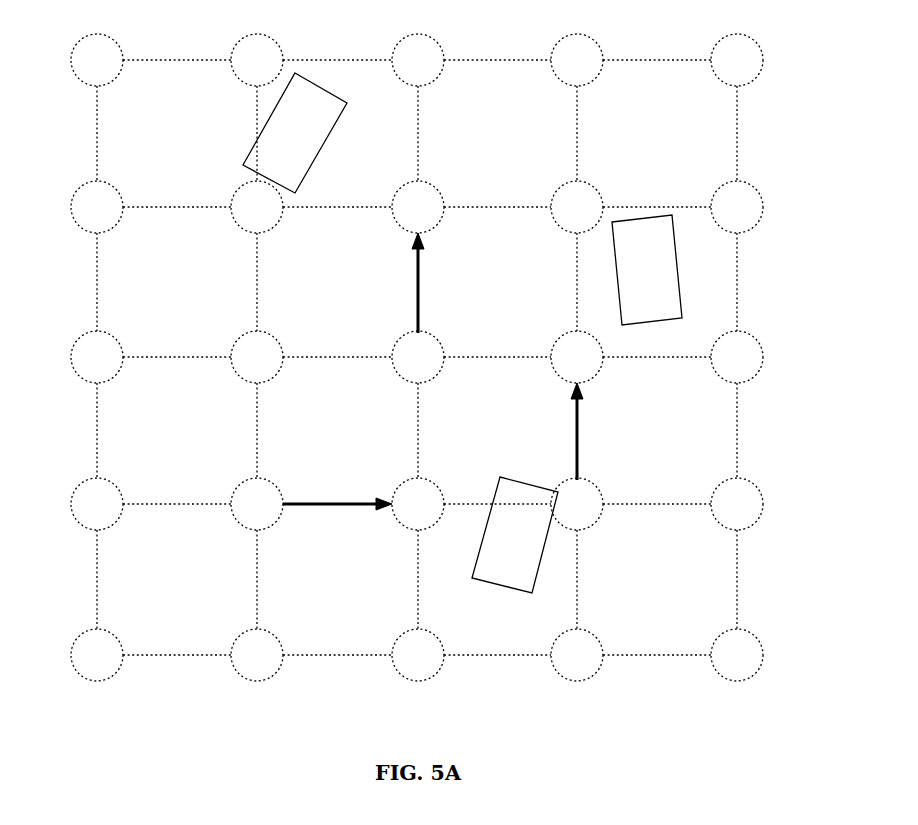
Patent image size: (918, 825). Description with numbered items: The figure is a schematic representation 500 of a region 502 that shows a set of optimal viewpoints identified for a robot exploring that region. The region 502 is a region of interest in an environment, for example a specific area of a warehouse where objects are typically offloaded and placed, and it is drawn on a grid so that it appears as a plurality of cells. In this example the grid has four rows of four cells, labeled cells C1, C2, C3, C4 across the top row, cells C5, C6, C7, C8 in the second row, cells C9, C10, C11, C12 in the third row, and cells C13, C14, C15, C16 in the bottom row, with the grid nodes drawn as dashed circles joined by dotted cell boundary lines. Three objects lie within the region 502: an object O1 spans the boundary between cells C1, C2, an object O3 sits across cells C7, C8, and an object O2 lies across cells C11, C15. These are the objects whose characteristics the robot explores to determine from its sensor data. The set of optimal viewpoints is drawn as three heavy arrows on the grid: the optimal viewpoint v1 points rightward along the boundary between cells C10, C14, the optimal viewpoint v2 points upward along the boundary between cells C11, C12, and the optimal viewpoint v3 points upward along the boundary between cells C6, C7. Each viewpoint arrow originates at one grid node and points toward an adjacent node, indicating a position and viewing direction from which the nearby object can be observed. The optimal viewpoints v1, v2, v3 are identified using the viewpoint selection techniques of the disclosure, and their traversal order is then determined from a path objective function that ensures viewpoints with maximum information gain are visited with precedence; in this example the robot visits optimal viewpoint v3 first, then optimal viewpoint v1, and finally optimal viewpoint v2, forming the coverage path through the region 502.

The schematic representation 500 is at (436, 409).
The region 502 is at (739, 131).
The cell C1 is at (177, 133).
The cell C2 is at (337, 133).
The cell C3 is at (497, 133).
The cell C4 is at (657, 133).
The cell C5 is at (177, 282).
The cell C6 is at (337, 282).
The cell C7 is at (497, 282).
The cell C8 is at (657, 282).
The cell C9 is at (177, 430).
The cell C10 is at (337, 430).
The cell C11 is at (497, 430).
The cell C12 is at (657, 430).
The cell C13 is at (177, 579).
The cell C14 is at (337, 579).
The cell C15 is at (497, 579).
The cell C16 is at (657, 579).
The object O1 is at (295, 133).
The object O2 is at (515, 535).
The object O3 is at (647, 270).
The optimal viewpoint v1 is at (334, 491).
The optimal viewpoint v2 is at (587, 431).
The optimal viewpoint v3 is at (425, 283).